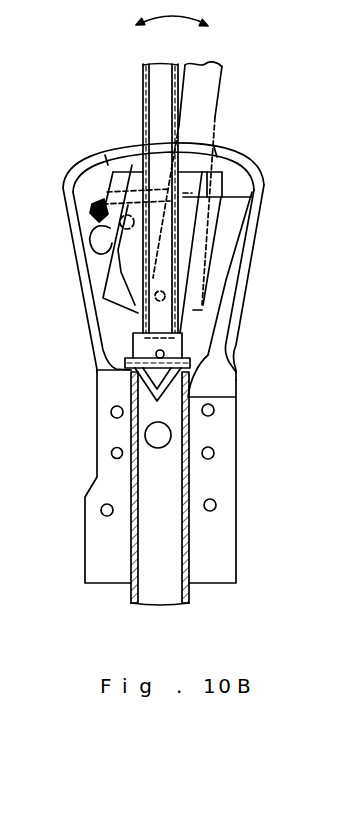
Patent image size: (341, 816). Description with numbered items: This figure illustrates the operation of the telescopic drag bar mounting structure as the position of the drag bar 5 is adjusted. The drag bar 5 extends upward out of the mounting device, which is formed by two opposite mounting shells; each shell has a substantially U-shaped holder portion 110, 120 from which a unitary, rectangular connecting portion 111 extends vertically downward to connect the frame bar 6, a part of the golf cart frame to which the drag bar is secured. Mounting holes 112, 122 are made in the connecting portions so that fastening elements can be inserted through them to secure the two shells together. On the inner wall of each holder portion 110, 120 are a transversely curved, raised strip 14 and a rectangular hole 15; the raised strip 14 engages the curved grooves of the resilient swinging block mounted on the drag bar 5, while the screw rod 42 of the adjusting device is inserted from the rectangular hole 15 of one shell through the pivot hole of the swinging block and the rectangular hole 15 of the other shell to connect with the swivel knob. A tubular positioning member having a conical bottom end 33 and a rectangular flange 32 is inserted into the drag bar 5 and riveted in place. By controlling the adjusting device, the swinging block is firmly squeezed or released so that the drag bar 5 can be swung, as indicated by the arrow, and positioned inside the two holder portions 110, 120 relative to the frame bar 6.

The drag bar 5 is at (157, 101).
The frame bar 6 is at (173, 571).
The transversely curved, raised strip 14 is at (253, 195).
The rectangular hole 15 is at (92, 210).
The rectangular flange 32 is at (187, 364).
The conical bottom end 33 is at (236, 396).
The screw rod 42 is at (88, 272).
The holder portion 110 is at (255, 238).
The connecting portion 111 is at (223, 435).
The mounting holes 112 is at (211, 456).
The holder portion 120 is at (85, 166).
The mounting holes 122 is at (112, 452).